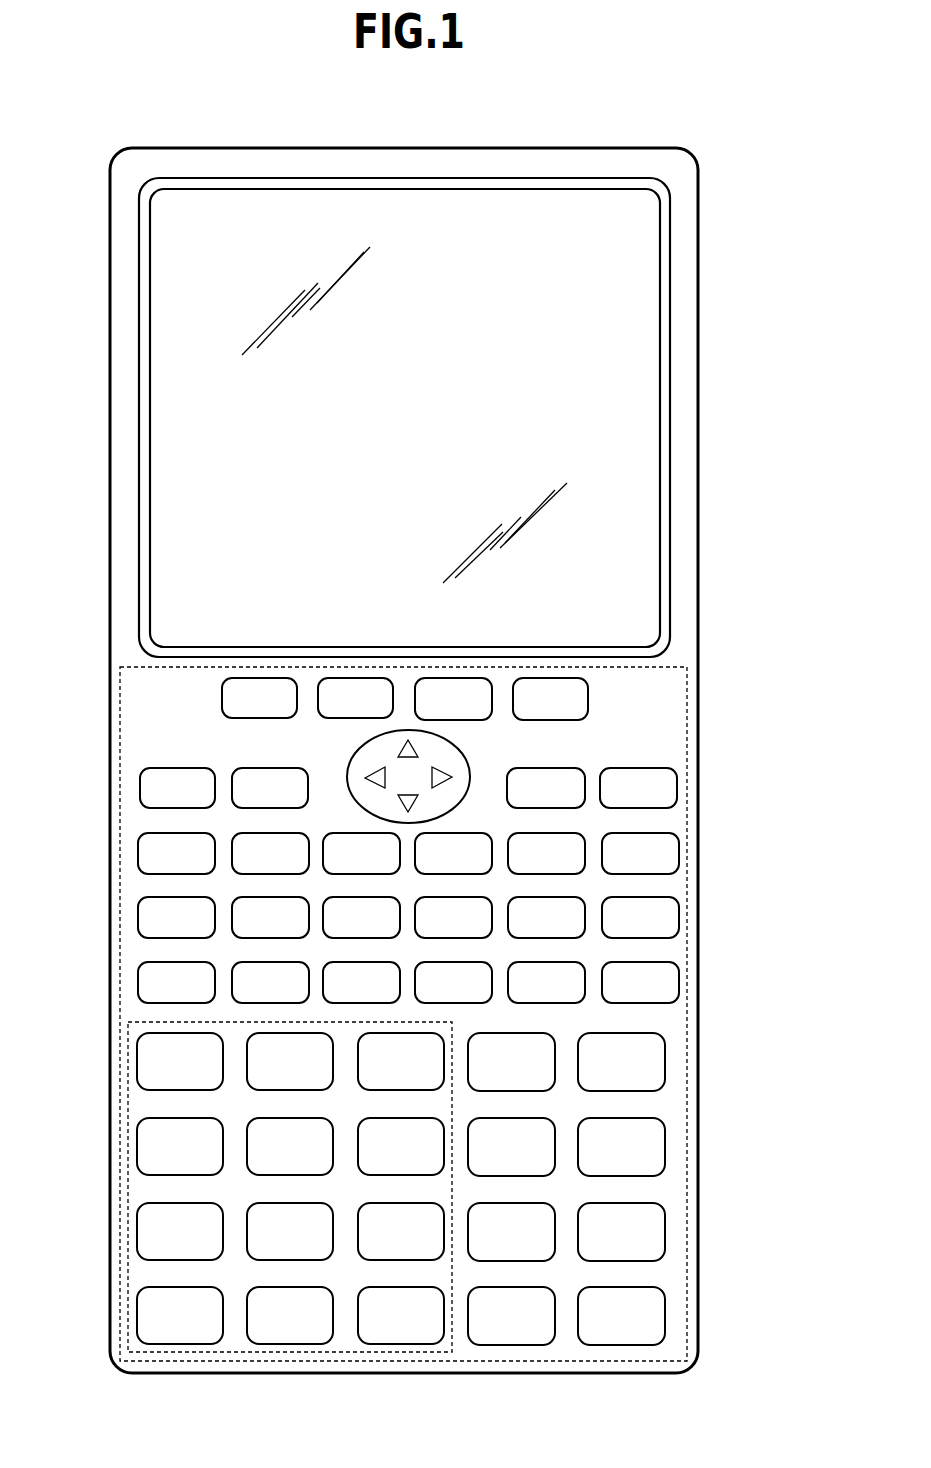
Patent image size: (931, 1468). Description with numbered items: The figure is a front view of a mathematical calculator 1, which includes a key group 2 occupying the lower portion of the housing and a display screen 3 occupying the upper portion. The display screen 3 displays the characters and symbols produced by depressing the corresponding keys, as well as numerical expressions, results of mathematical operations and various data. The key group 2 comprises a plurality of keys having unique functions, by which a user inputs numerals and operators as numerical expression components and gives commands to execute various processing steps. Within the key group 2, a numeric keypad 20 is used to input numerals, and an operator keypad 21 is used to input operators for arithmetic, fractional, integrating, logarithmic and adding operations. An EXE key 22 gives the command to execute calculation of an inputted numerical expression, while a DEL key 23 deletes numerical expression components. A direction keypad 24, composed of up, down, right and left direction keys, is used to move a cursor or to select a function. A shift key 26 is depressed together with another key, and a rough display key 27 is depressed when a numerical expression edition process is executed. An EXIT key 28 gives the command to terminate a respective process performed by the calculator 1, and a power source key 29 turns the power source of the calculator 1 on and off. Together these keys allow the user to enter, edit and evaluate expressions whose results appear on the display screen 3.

The mathematical calculator 1 is at (760, 117).
The key group 2 is at (688, 913).
The display screen 3 is at (660, 370).
The numeric keypad 20 is at (128, 1160).
The operator keypad 21 is at (272, 833).
The EXE key 22 is at (666, 1313).
The DEL key 23 is at (528, 1033).
The direction keypad 24 is at (462, 754).
The shift key 26 is at (140, 787).
The rough display key 27 is at (554, 678).
The EXIT key 28 is at (456, 678).
The power source key 29 is at (666, 1059).